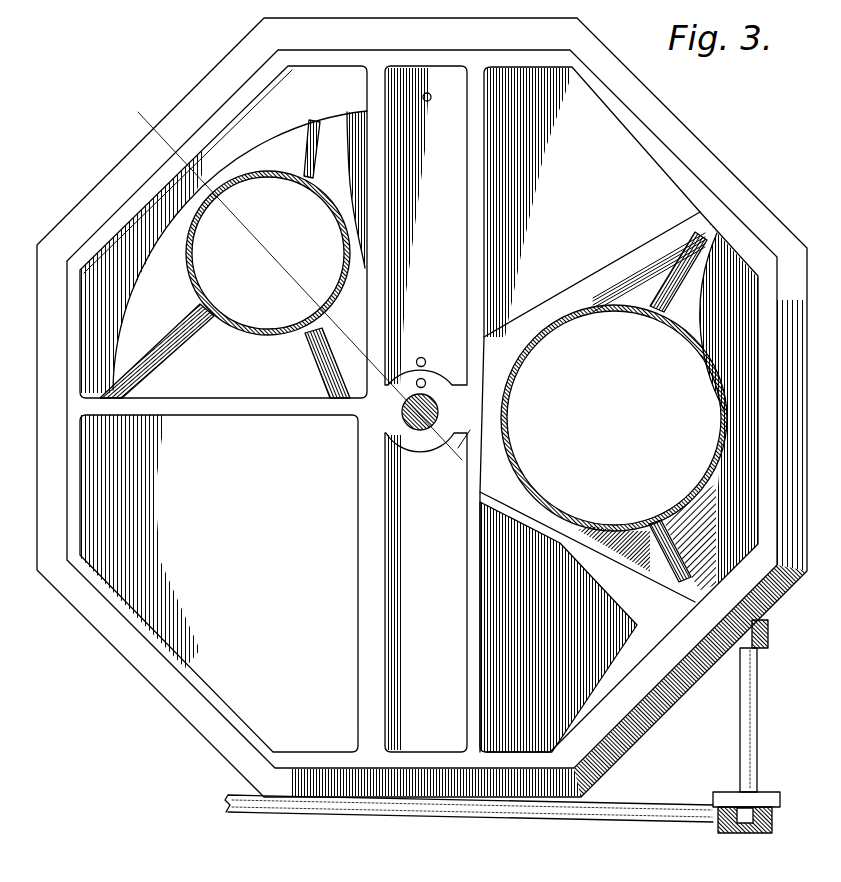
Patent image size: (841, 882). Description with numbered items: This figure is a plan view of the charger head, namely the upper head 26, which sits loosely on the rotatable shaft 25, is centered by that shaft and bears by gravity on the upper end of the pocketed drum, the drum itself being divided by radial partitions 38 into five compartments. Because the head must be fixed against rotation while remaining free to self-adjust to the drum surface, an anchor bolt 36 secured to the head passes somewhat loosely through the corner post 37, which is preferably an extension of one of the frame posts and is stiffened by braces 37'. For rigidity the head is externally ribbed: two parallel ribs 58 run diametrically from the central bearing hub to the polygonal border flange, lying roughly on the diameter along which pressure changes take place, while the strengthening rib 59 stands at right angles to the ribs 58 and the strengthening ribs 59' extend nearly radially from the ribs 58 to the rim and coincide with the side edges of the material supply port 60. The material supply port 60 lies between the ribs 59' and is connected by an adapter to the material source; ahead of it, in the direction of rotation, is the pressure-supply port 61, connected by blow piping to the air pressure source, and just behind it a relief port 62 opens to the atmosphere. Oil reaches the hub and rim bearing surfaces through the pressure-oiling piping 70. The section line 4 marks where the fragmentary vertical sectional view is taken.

The upper head 26 is at (695, 122).
The parallel ribs 58 is at (380, 100).
The strengthening rib 59 is at (223, 409).
The strengthening ribs 59' is at (619, 409).
The material supply port 60 is at (717, 232).
The pressure-supply port 61 is at (253, 150).
The relief port 62 is at (655, 690).
The rotatable shaft 25 is at (428, 432).
The piping 70 is at (421, 357).
The section line 4— 4 is at (294, 287).
The anchor bolt 36 is at (758, 717).
The corner post 37 is at (748, 833).
The braces 37' is at (469, 819).
The radial partitions 38 is at (769, 636).